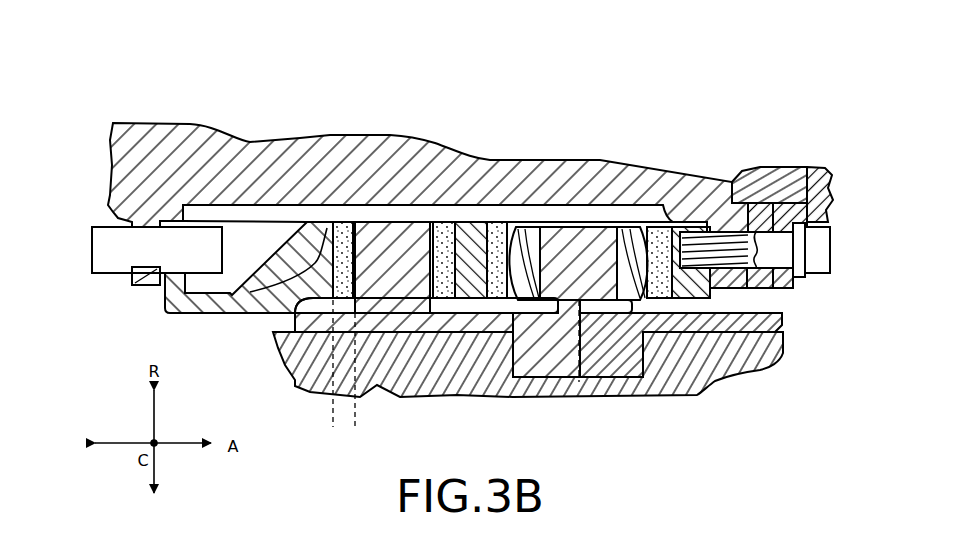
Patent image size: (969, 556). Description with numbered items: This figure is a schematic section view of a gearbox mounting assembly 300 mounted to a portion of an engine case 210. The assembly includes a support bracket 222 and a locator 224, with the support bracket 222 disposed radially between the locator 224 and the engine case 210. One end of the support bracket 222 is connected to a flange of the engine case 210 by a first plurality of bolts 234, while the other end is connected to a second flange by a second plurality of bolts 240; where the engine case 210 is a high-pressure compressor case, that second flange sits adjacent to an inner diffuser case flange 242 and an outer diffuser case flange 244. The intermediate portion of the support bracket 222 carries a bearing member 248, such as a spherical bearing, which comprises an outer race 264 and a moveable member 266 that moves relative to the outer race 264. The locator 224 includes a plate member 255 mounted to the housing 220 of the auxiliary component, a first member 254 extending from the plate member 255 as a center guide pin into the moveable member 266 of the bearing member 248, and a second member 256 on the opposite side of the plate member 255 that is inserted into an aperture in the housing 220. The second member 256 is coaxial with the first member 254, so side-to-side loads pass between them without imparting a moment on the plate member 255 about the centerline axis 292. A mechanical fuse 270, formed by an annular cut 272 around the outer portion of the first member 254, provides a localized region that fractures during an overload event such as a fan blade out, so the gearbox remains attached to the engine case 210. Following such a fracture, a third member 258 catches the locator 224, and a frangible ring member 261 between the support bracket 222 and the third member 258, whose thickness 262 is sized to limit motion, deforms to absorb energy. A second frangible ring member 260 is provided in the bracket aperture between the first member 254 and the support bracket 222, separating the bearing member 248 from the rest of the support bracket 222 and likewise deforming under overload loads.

The gearbox mounting assembly 300 is at (104, 72).
The engine case 210 is at (433, 142).
The housing 220 is at (735, 372).
The support bracket 222 is at (257, 310).
The locator 224 is at (623, 370).
The first plurality of bolts 234 is at (105, 275).
The second plurality of bolts 240 is at (812, 275).
The inner diffuser case flange 242 is at (760, 190).
The outer diffuser case flange 244 is at (812, 197).
The bearing member 248 is at (525, 233).
The first member 254 is at (602, 233).
The plate member 255 is at (312, 325).
The second member 256 is at (516, 378).
The third member 258 is at (386, 235).
The frangible ring member 260 is at (498, 233).
The frangible ring member 261 is at (343, 235).
The thickness 262 is at (345, 417).
The outer race 264 is at (508, 290).
The moveable member 266 is at (527, 293).
The mechanical fuse 270 is at (583, 313).
The annular cut 272 is at (630, 310).
The centerline axis 292 is at (578, 387).